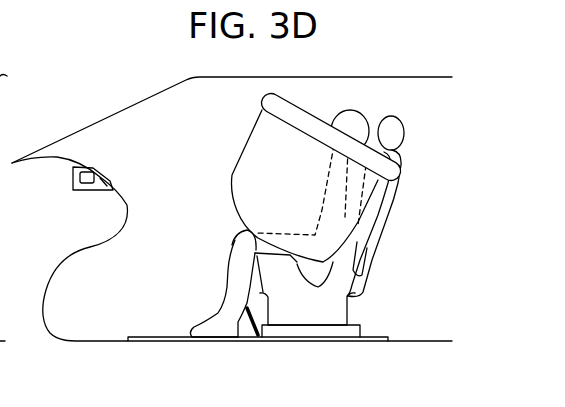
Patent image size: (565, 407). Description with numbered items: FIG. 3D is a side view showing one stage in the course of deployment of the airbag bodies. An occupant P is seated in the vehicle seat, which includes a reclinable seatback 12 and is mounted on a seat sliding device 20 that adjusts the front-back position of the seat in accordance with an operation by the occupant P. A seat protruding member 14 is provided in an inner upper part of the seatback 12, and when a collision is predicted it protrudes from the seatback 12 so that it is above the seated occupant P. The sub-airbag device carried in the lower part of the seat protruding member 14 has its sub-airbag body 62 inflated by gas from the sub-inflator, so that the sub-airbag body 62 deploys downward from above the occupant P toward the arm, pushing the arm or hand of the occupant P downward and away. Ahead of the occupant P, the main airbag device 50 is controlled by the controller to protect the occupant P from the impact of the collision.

The seat protruding member 14 is at (264, 101).
The sub-airbag body 62 is at (240, 155).
The main airbag device 50 is at (102, 192).
The seatback 12 is at (383, 230).
The seat sliding device 20 is at (372, 323).
The occupant P is at (230, 252).